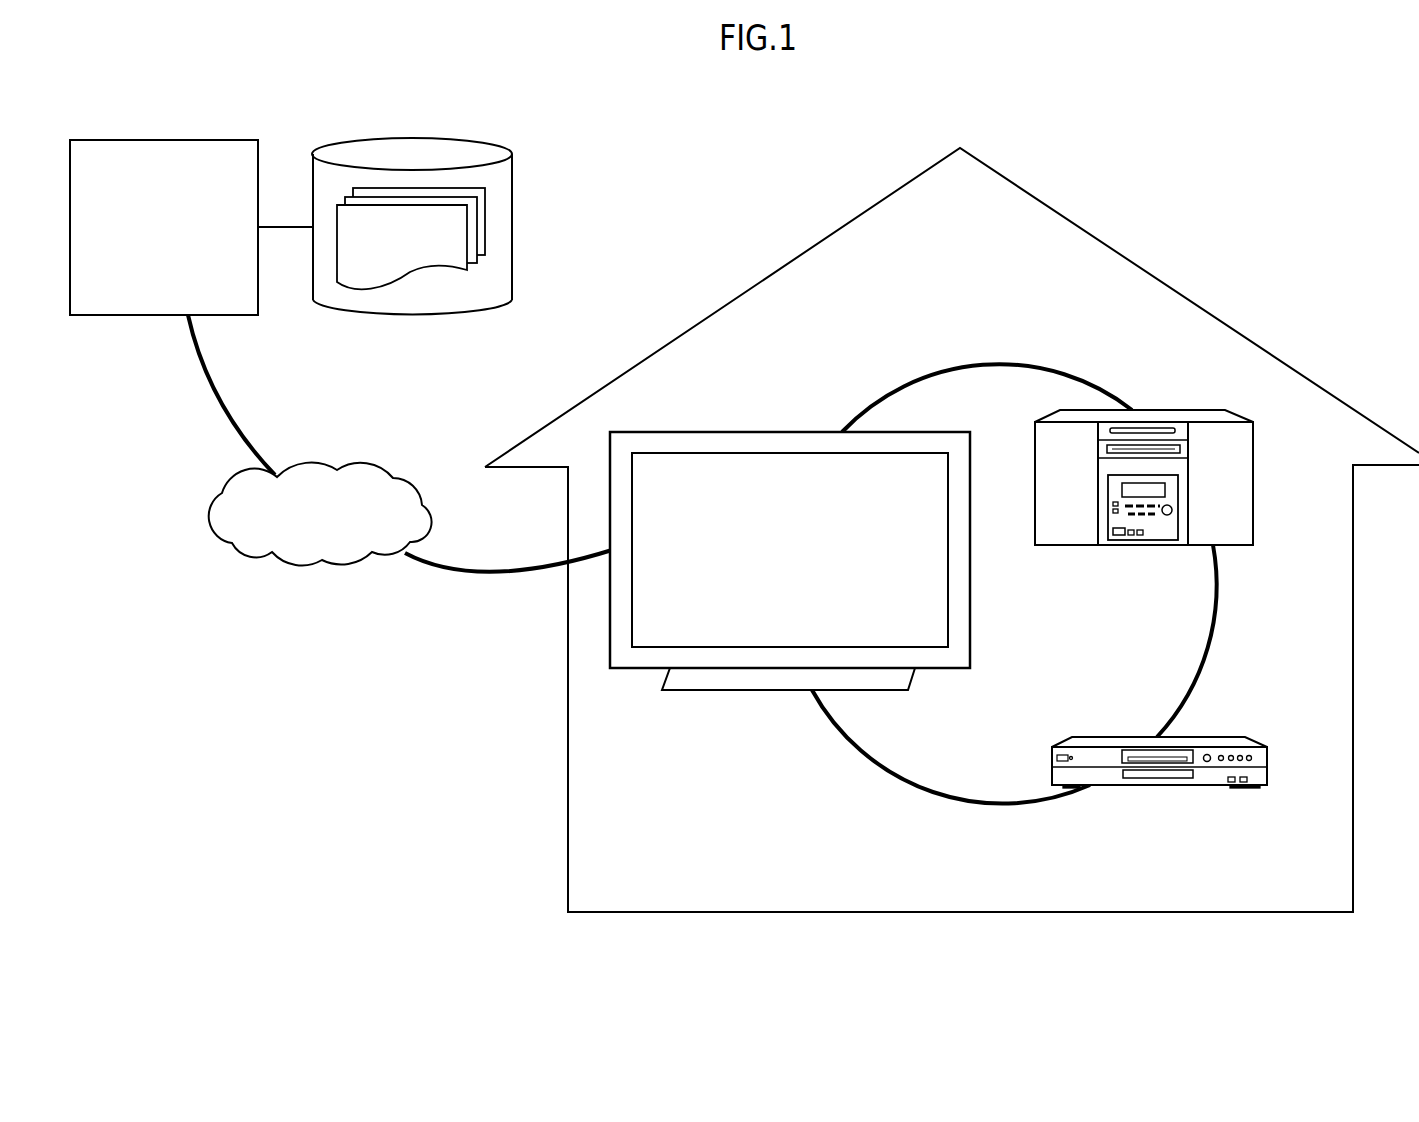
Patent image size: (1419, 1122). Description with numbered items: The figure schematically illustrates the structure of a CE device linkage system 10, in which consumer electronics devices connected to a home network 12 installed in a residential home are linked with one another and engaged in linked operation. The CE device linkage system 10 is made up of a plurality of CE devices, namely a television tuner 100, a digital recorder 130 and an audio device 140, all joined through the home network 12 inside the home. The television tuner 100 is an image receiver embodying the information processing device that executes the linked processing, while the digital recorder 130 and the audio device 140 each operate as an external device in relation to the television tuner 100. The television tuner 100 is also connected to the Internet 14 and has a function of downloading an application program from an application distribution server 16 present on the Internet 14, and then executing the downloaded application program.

The CE device linkage system 10 is at (209, 850).
The home network 12 is at (1000, 362).
The Internet 14 is at (372, 462).
The application distribution server 16 is at (162, 140).
The television tuner 100 is at (790, 432).
The digital recorder 130 is at (1093, 737).
The audio device 140 is at (1185, 410).